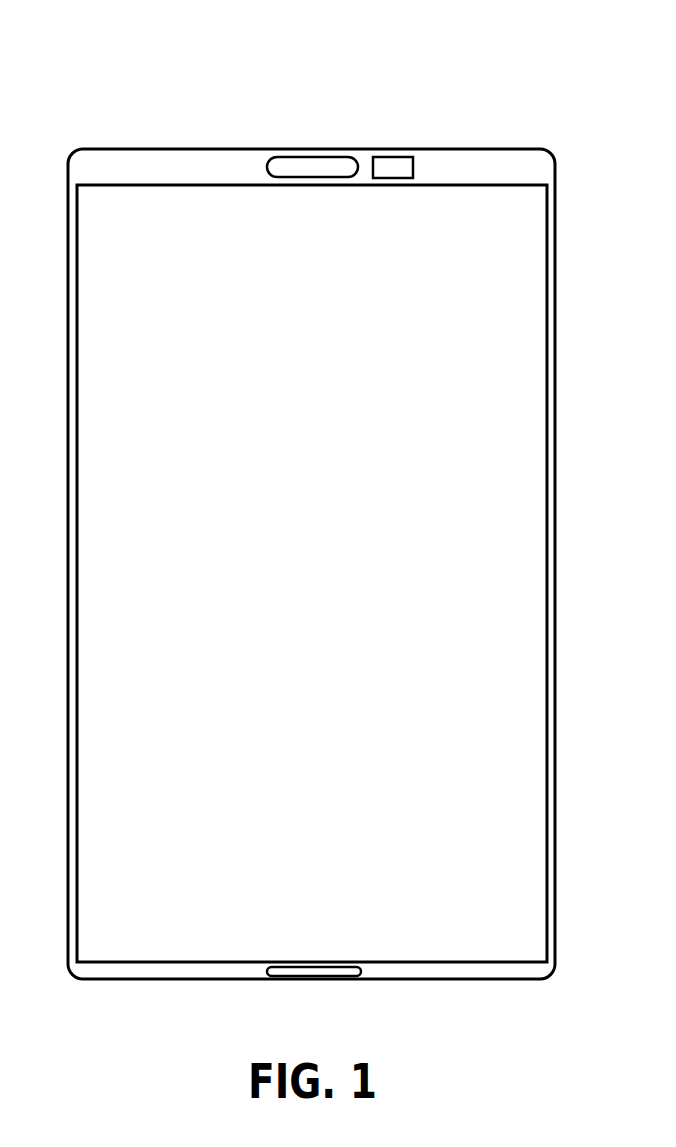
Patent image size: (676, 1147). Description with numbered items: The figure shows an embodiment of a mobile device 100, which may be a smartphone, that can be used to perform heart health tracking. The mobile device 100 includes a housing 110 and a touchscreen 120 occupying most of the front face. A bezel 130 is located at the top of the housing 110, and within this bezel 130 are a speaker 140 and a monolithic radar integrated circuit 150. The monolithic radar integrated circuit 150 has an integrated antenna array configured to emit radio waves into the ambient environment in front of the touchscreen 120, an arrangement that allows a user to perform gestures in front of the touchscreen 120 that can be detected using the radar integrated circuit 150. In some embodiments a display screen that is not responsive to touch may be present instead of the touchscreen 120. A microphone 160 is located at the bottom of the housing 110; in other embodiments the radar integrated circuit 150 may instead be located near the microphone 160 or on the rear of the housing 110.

The mobile device 100 is at (76, 60).
The housing 110 is at (108, 148).
The touchscreen 120 is at (203, 185).
The bezel 130 is at (232, 154).
The speaker 140 is at (275, 157).
The monolithic radar integrated circuit 150 is at (381, 157).
The microphone 160 is at (325, 966).